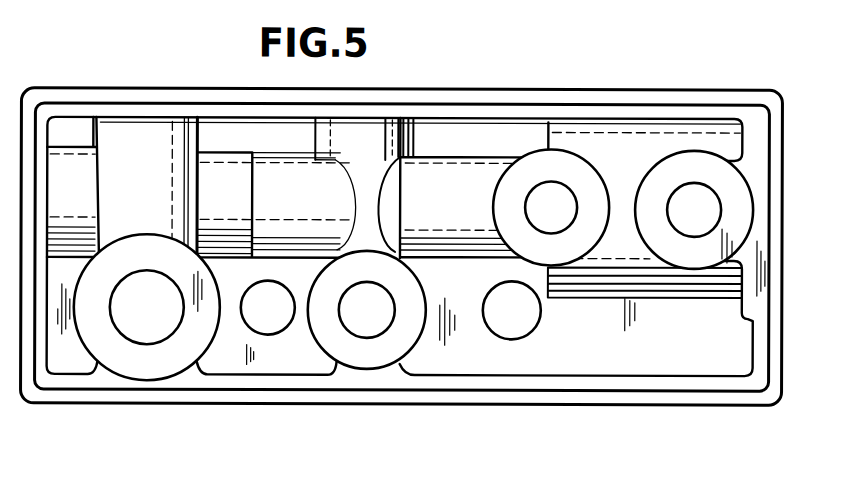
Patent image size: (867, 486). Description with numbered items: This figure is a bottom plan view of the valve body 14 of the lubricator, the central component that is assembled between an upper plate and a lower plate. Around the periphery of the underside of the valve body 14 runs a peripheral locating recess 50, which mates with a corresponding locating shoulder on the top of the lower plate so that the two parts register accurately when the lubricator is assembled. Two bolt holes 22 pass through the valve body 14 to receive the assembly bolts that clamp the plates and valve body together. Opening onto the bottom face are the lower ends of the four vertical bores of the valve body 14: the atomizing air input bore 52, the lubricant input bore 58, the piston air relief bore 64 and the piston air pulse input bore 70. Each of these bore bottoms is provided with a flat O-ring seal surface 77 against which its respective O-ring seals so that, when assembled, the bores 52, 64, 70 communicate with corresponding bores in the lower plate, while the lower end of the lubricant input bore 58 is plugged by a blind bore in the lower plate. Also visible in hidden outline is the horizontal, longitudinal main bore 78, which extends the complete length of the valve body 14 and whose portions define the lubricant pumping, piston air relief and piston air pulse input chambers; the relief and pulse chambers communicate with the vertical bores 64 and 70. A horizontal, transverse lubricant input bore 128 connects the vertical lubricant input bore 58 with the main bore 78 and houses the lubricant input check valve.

The valve body 14 is at (781, 294).
The bolt hole 22 is at (278, 325).
The peripheral locating recess 50 is at (636, 385).
The atomizing air input bore 52 is at (160, 330).
The lubricant input bore 58 is at (365, 328).
The piston air relief bore 64 is at (540, 197).
The piston air pulse input bore 70 is at (680, 195).
The flat O-ring seal surface 77 is at (580, 172).
The main bore 78 is at (72, 178).
The lubricant input bore 128 is at (365, 187).